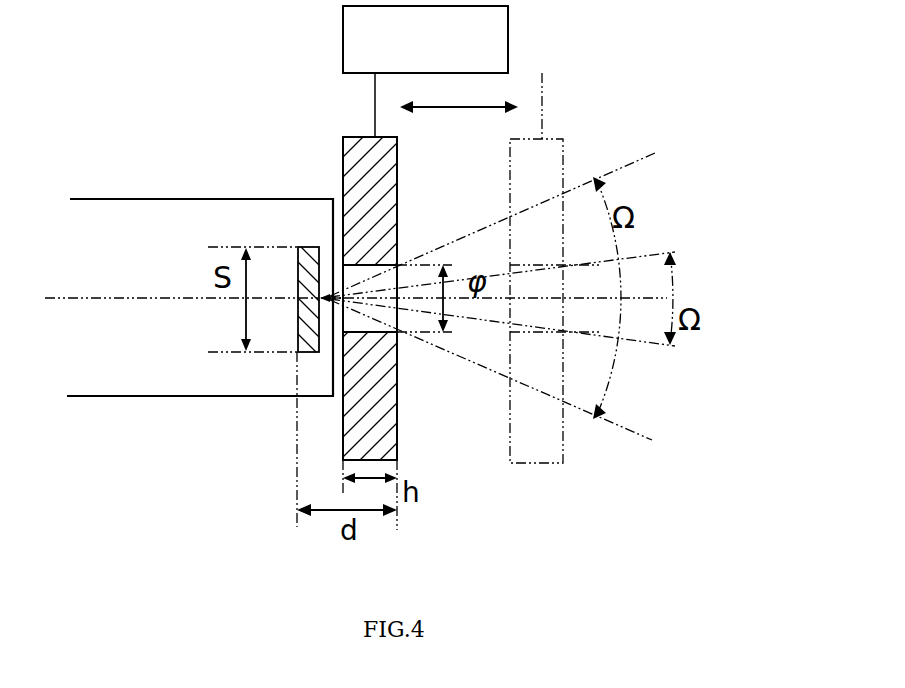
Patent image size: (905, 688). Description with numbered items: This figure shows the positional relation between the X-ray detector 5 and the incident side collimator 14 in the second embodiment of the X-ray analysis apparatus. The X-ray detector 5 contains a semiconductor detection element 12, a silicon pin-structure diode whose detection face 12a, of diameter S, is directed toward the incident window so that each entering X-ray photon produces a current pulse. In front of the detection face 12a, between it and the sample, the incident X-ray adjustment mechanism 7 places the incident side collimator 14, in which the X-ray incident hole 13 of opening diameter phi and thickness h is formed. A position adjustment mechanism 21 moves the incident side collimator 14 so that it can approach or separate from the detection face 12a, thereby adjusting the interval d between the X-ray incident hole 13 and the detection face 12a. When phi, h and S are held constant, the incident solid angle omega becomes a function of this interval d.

The X-ray detector 5 is at (173, 396).
The incident X-ray adjustment mechanism 7 is at (200, 72).
The semiconductor detection element 12 is at (296, 267).
The detection face 12a is at (345, 263).
The X-ray incident hole 13 is at (392, 333).
The incident side collimator 14 is at (343, 167).
The position adjustment mechanism 21 is at (343, 42).